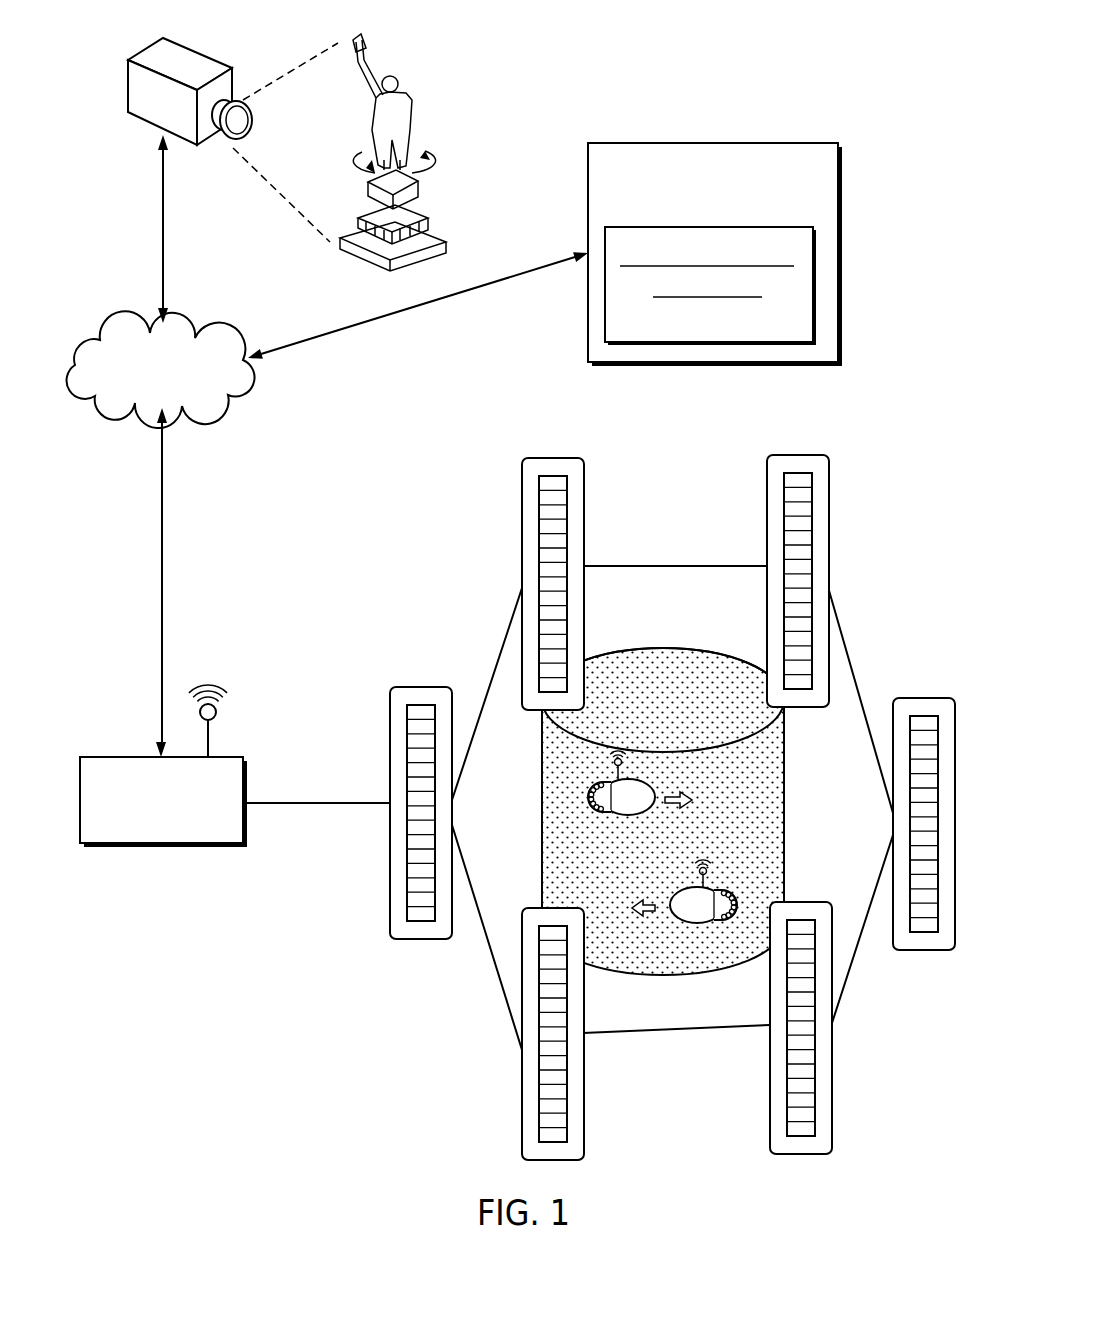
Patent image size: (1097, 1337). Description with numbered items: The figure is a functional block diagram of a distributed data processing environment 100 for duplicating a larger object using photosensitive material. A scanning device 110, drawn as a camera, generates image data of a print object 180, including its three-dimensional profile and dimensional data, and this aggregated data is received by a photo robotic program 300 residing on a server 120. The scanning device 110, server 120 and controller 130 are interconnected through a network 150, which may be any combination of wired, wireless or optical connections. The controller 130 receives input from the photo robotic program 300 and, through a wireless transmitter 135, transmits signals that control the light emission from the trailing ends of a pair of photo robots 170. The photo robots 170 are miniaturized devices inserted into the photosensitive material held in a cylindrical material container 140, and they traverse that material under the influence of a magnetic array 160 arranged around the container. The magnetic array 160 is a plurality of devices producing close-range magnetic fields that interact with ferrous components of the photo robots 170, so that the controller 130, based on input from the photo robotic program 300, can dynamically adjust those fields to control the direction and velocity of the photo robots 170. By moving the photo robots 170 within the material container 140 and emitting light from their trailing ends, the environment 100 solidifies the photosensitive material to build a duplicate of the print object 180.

The distributed data processing environment 100 is at (784, 46).
The scanning device 110 is at (128, 76).
The server 120 is at (667, 181).
The controller 130 is at (127, 845).
The wireless transmitter 135 is at (210, 733).
The material container 140 is at (675, 648).
The network 150 is at (120, 323).
The magnetic array 160 is at (767, 492).
The photo robots 170 is at (670, 893).
The print object 180 is at (406, 108).
The photo robotic program 300 is at (729, 331).